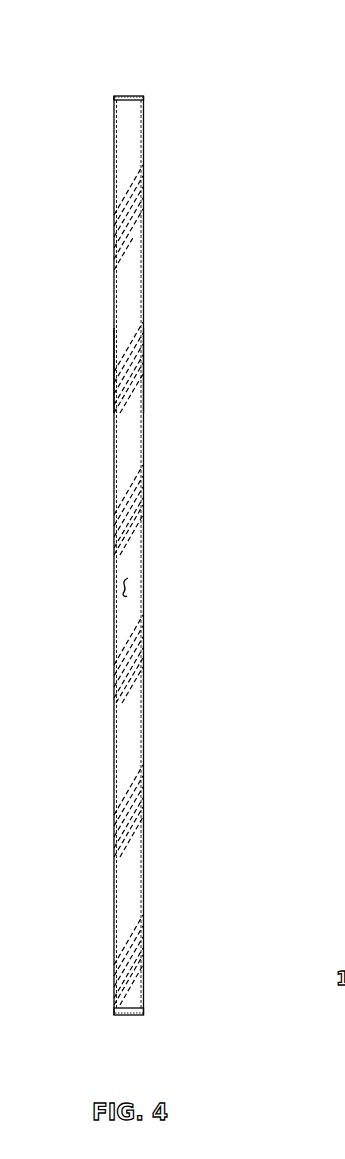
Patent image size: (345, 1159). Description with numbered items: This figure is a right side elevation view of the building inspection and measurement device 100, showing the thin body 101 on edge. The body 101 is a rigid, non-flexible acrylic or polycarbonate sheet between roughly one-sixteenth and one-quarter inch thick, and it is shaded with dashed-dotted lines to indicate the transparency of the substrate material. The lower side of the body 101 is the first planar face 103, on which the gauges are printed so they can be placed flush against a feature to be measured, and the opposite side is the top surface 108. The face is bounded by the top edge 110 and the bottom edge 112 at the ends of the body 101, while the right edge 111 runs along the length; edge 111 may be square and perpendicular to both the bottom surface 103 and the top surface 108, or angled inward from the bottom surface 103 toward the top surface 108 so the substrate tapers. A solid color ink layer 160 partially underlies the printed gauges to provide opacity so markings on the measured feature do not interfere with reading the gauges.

The building inspection and measurement device 100 is at (195, 241).
The body 101 is at (135, 129).
The first planar face 103 is at (143, 408).
The top surface 108 is at (115, 375).
The top edge 110 is at (130, 95).
The right edge 111 is at (143, 582).
The bottom edge 112 is at (126, 1018).
The ink layer 160 is at (145, 488).